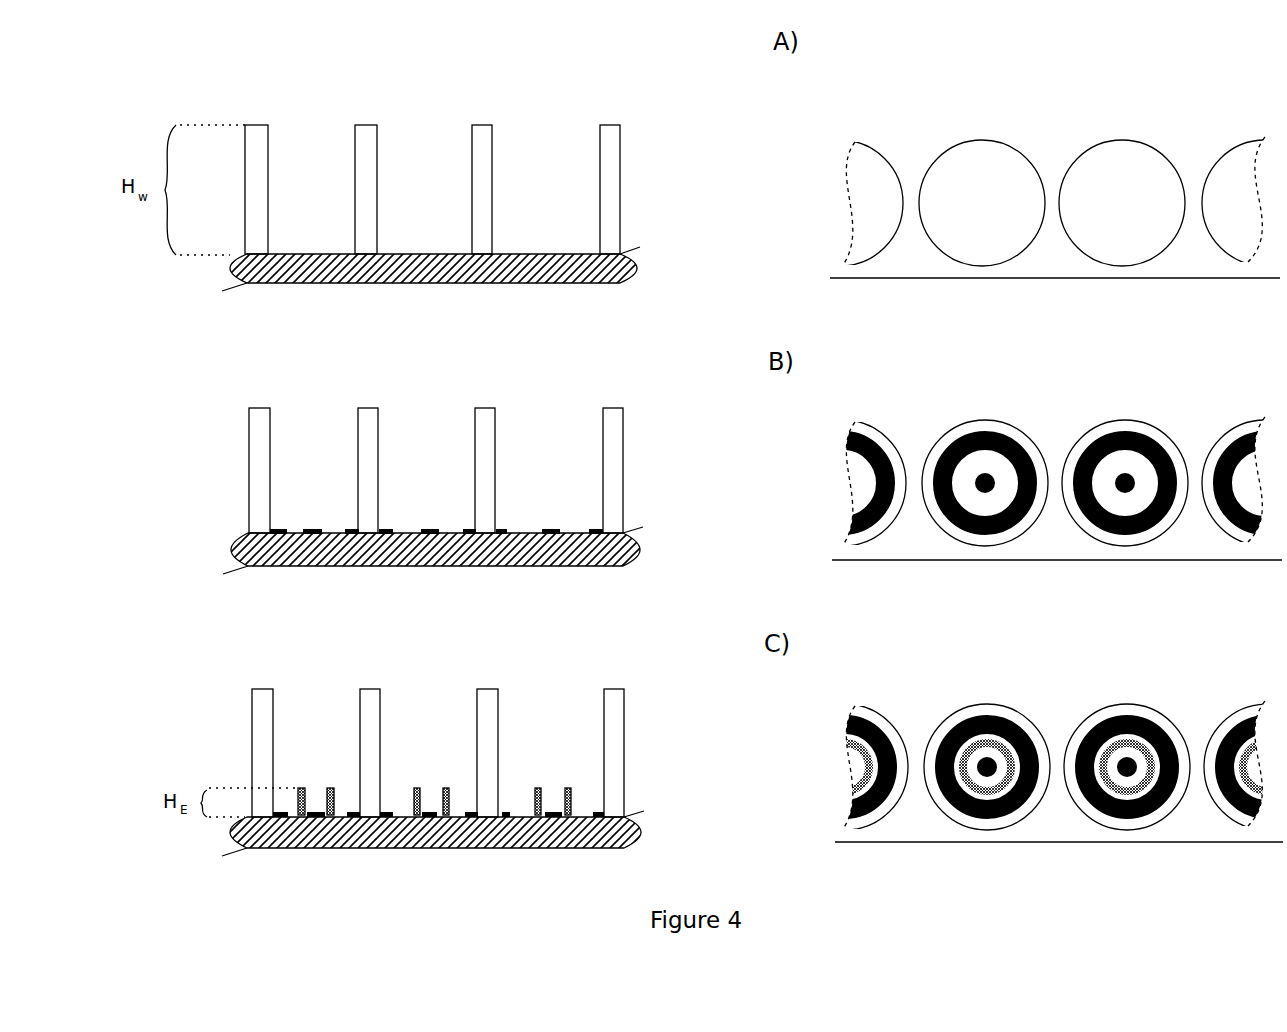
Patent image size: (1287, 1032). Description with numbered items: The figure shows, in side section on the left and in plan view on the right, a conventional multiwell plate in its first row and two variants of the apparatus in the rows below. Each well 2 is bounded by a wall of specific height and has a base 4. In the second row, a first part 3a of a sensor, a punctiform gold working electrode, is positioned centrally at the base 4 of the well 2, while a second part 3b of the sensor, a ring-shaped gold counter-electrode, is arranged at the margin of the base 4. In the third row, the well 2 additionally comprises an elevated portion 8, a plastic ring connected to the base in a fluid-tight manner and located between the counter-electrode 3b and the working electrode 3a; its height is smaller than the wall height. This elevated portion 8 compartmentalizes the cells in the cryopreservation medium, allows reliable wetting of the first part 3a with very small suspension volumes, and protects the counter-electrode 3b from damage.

The well 2 is at (606, 153).
The base 4 is at (573, 251).
The first part of a sensor 3a is at (429, 527).
The second part of a sensor 3b is at (500, 527).
The elevated portion 8 is at (417, 785).